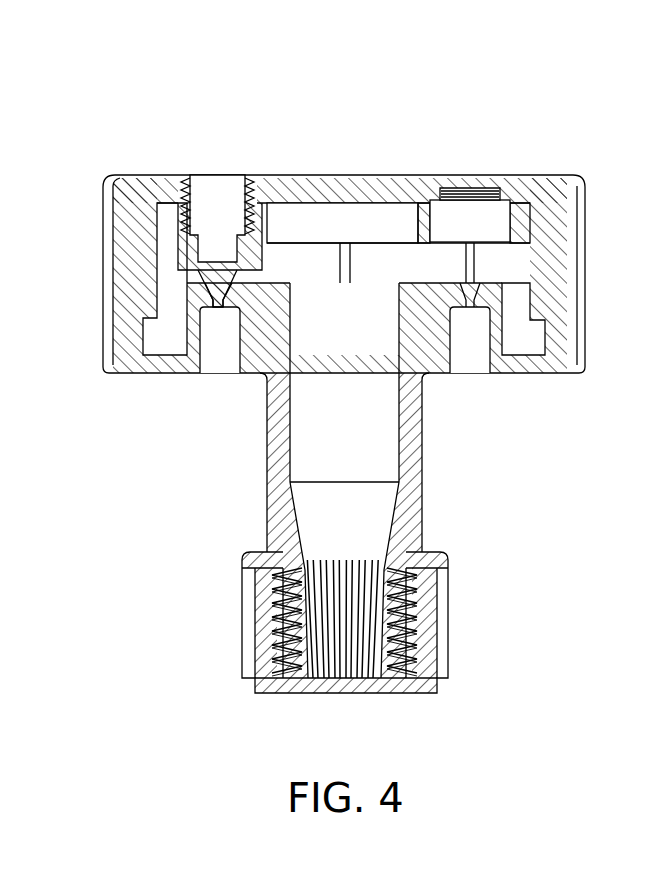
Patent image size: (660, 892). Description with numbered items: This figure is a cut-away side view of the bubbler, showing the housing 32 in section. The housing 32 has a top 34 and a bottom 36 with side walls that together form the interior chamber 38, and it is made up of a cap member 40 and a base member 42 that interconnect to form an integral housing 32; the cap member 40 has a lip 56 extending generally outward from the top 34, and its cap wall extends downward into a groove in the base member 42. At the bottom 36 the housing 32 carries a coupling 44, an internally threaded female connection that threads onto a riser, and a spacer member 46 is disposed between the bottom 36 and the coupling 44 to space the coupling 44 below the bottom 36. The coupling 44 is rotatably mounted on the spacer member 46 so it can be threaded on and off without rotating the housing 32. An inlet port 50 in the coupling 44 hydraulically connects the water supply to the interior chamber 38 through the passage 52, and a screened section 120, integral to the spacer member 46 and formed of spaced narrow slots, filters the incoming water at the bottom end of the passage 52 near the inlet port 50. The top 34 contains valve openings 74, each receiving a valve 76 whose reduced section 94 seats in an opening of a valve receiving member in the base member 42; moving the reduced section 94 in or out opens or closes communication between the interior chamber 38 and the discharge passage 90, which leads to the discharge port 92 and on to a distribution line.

The housing 32 is at (586, 330).
The top 34 is at (305, 175).
The bottom 36 is at (143, 372).
The interior chamber 38 is at (375, 222).
The cap member 40 is at (548, 190).
The base member 42 is at (545, 373).
The coupling 44 is at (448, 615).
The spacer member 46 is at (278, 520).
The inlet port 50 is at (295, 692).
The passage 52 is at (357, 450).
The lip 56 is at (110, 187).
The valve opening 74 is at (455, 186).
The valve 76 is at (222, 198).
The discharge passage 90 is at (222, 357).
The discharge port 92 is at (468, 376).
The reduced section 94 is at (190, 295).
The screened section 120 is at (365, 548).